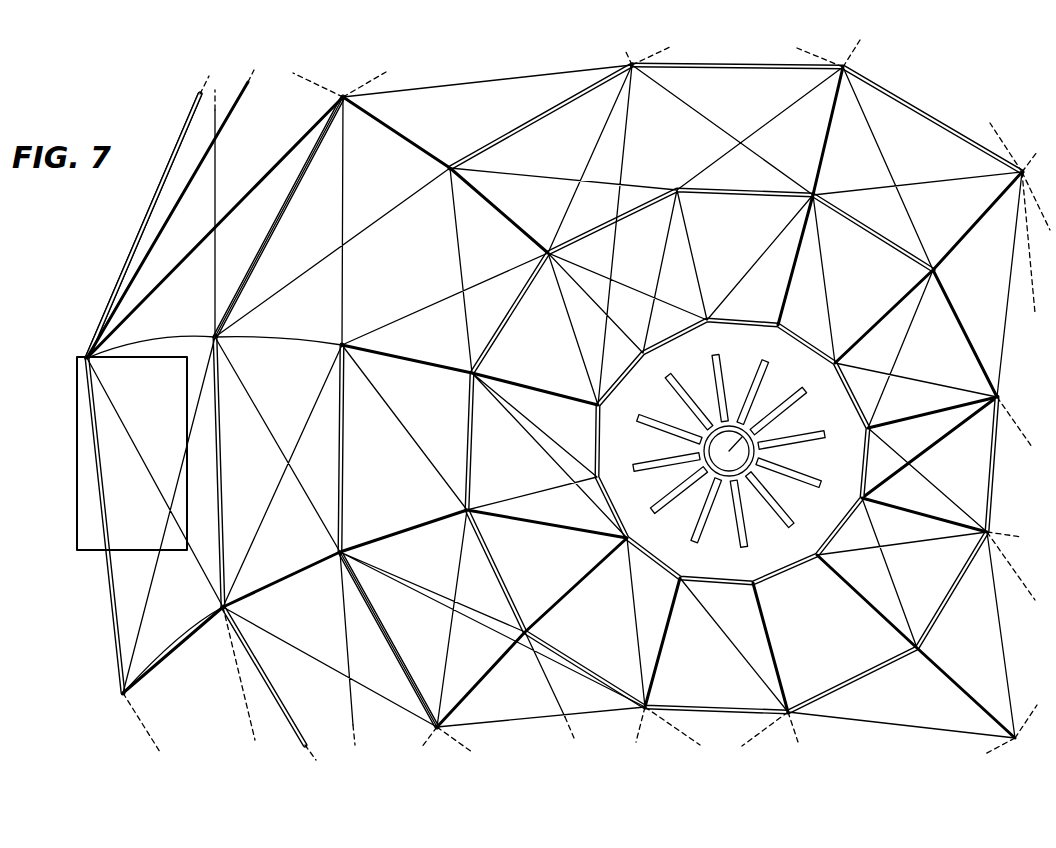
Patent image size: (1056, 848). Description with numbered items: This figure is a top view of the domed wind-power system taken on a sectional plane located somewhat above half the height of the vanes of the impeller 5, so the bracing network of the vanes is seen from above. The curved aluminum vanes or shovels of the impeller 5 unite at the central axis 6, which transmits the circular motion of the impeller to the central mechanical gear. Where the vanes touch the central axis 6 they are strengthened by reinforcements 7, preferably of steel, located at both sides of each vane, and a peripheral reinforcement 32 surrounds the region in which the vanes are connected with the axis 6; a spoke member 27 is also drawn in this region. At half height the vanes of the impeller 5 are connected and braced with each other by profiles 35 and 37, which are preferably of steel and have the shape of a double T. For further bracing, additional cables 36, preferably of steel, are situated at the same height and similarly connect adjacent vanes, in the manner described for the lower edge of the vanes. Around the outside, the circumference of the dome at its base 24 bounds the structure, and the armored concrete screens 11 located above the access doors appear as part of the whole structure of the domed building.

The impeller 5 is at (832, 122).
The central axis 6 is at (735, 440).
The reinforcements 7 is at (616, 372).
The screens 11 is at (78, 486).
The circumference of the dome at its base 24 is at (118, 575).
The spoke member 27 is at (832, 440).
The peripheral reinforcement 32 is at (748, 512).
The profiles 35 is at (140, 228).
The cables 36 is at (215, 243).
The profiles 37 is at (533, 123).